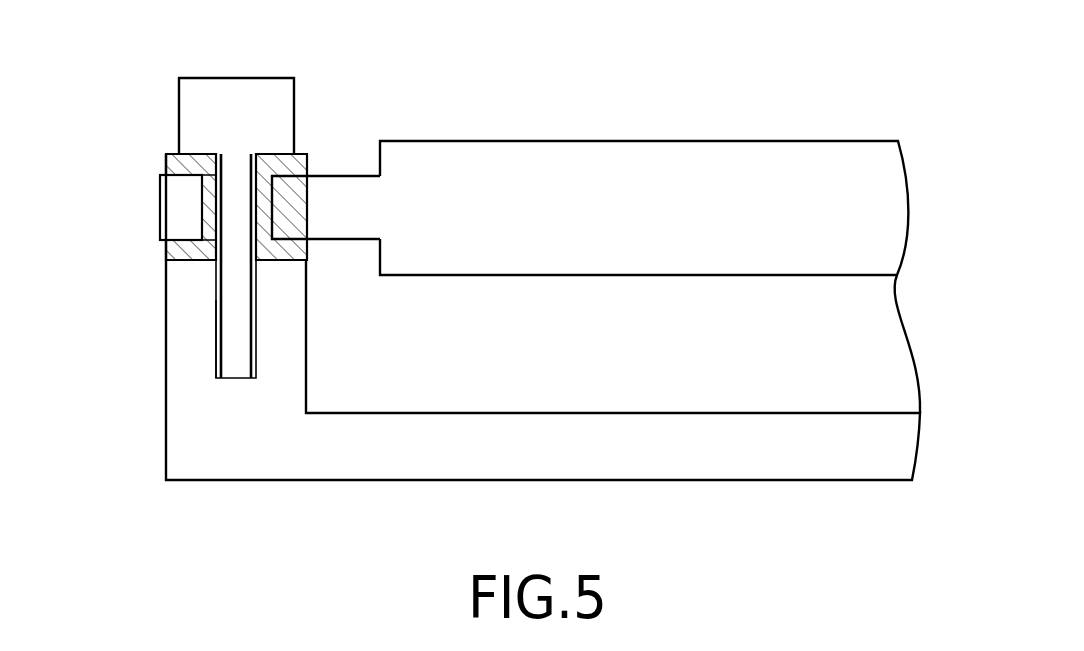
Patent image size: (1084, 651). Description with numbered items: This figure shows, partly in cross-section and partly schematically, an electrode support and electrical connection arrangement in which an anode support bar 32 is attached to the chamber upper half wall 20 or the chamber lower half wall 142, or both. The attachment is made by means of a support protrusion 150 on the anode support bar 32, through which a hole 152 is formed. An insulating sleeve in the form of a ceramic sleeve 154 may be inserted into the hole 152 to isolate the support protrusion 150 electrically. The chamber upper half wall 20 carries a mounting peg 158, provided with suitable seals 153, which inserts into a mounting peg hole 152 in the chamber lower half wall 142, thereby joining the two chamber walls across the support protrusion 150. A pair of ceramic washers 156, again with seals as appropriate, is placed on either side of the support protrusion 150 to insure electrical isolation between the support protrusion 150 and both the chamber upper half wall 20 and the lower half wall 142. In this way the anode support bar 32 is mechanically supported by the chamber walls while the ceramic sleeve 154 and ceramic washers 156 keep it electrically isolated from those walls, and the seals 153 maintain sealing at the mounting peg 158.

The chamber upper half wall 20 is at (197, 101).
The anode support bar 32 is at (512, 178).
The chamber lower half wall 142 is at (565, 427).
The support protrusion 150 is at (345, 182).
The hole 152 is at (198, 223).
The seals 153 is at (205, 369).
The ceramic sleeve 154 is at (200, 202).
The ceramic washers 156 is at (167, 166).
The mounting peg 158 is at (232, 328).